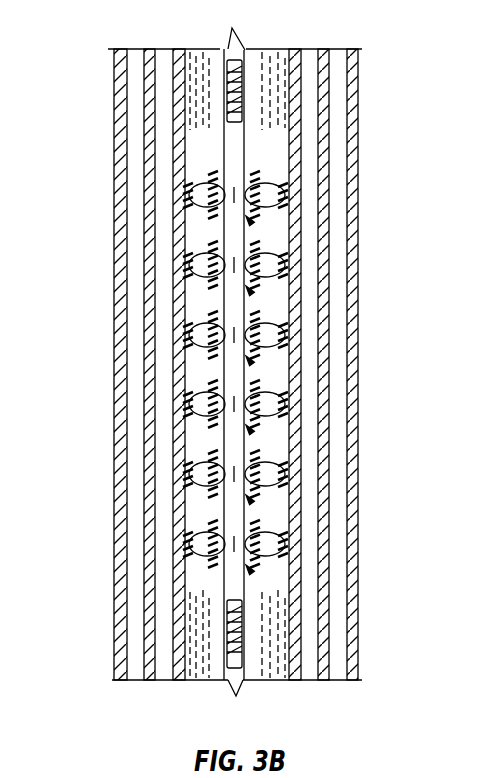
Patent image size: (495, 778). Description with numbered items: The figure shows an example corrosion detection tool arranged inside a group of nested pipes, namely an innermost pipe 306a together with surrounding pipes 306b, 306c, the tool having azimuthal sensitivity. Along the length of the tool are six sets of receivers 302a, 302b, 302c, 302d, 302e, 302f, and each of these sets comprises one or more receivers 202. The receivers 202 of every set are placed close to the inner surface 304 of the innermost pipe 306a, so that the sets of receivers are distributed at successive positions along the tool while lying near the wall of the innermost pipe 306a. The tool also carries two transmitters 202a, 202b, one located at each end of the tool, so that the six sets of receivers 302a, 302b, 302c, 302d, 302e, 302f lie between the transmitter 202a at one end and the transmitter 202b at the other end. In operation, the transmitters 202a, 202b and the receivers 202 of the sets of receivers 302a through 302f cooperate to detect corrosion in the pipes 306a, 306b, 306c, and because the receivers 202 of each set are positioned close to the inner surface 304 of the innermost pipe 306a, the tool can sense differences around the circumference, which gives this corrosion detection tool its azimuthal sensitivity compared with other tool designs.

The receiver 202 is at (208, 213).
The transmitter 202a is at (224, 88).
The transmitter 202b is at (228, 660).
The set of receivers 302a is at (246, 566).
The set of receivers 302b is at (246, 496).
The set of receivers 302c is at (246, 426).
The set of receivers 302d is at (246, 357).
The set of receivers 302e is at (246, 287).
The set of receivers 302f is at (246, 217).
The inner surface 304 is at (292, 655).
The innermost pipe 306a is at (300, 676).
The pipe 306b is at (328, 620).
The pipe 306c is at (357, 592).